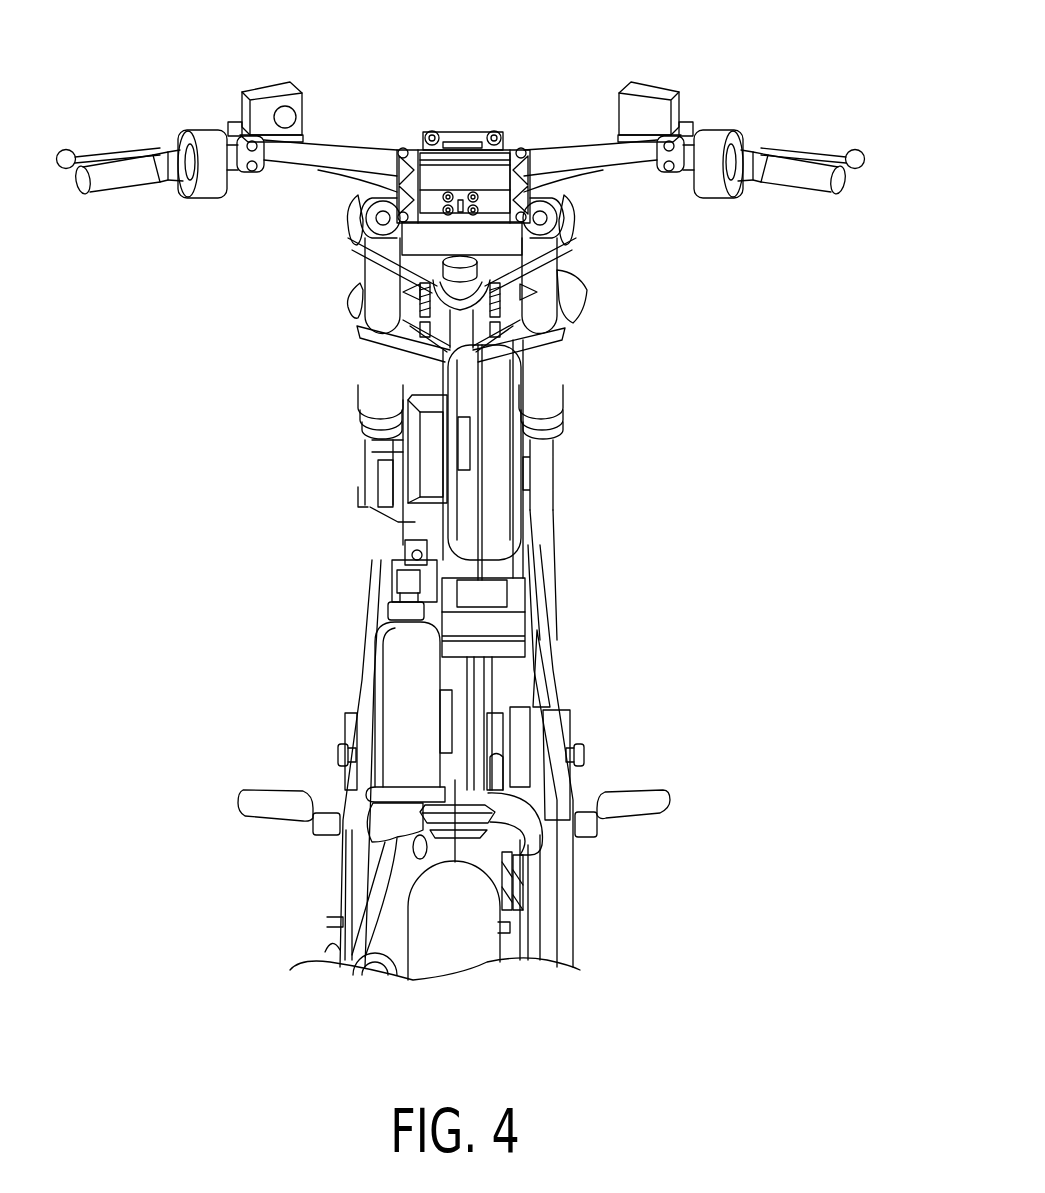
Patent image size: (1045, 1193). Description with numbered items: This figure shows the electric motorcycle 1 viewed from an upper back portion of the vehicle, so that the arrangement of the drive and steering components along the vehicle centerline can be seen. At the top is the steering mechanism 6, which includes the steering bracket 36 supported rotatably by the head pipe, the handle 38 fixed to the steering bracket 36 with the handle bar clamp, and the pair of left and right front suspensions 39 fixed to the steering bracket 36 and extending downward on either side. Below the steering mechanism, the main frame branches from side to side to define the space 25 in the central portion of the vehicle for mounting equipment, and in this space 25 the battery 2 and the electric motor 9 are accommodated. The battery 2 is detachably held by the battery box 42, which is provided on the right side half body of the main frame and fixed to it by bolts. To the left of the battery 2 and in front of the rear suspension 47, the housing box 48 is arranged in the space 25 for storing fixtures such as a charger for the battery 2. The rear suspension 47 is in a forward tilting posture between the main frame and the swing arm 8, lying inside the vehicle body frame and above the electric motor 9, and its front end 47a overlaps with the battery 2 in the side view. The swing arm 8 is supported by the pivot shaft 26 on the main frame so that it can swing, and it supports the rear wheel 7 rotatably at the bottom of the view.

The electric motorcycle 1 is at (372, 72).
The steering mechanism 6 is at (518, 118).
The handle 38 is at (637, 153).
The steering bracket 36 is at (547, 247).
The front suspensions 39 is at (363, 384).
The housing box 48 is at (407, 446).
The space 25 is at (433, 452).
The front end of the rear suspension 47a is at (367, 573).
The battery 2 is at (503, 515).
The battery box 42 is at (527, 615).
The electric motor 9 is at (457, 727).
The rear suspension 47 is at (395, 690).
The pivot shaft 26 is at (345, 755).
The swing arm 8 is at (557, 932).
The rear wheel 7 is at (443, 953).